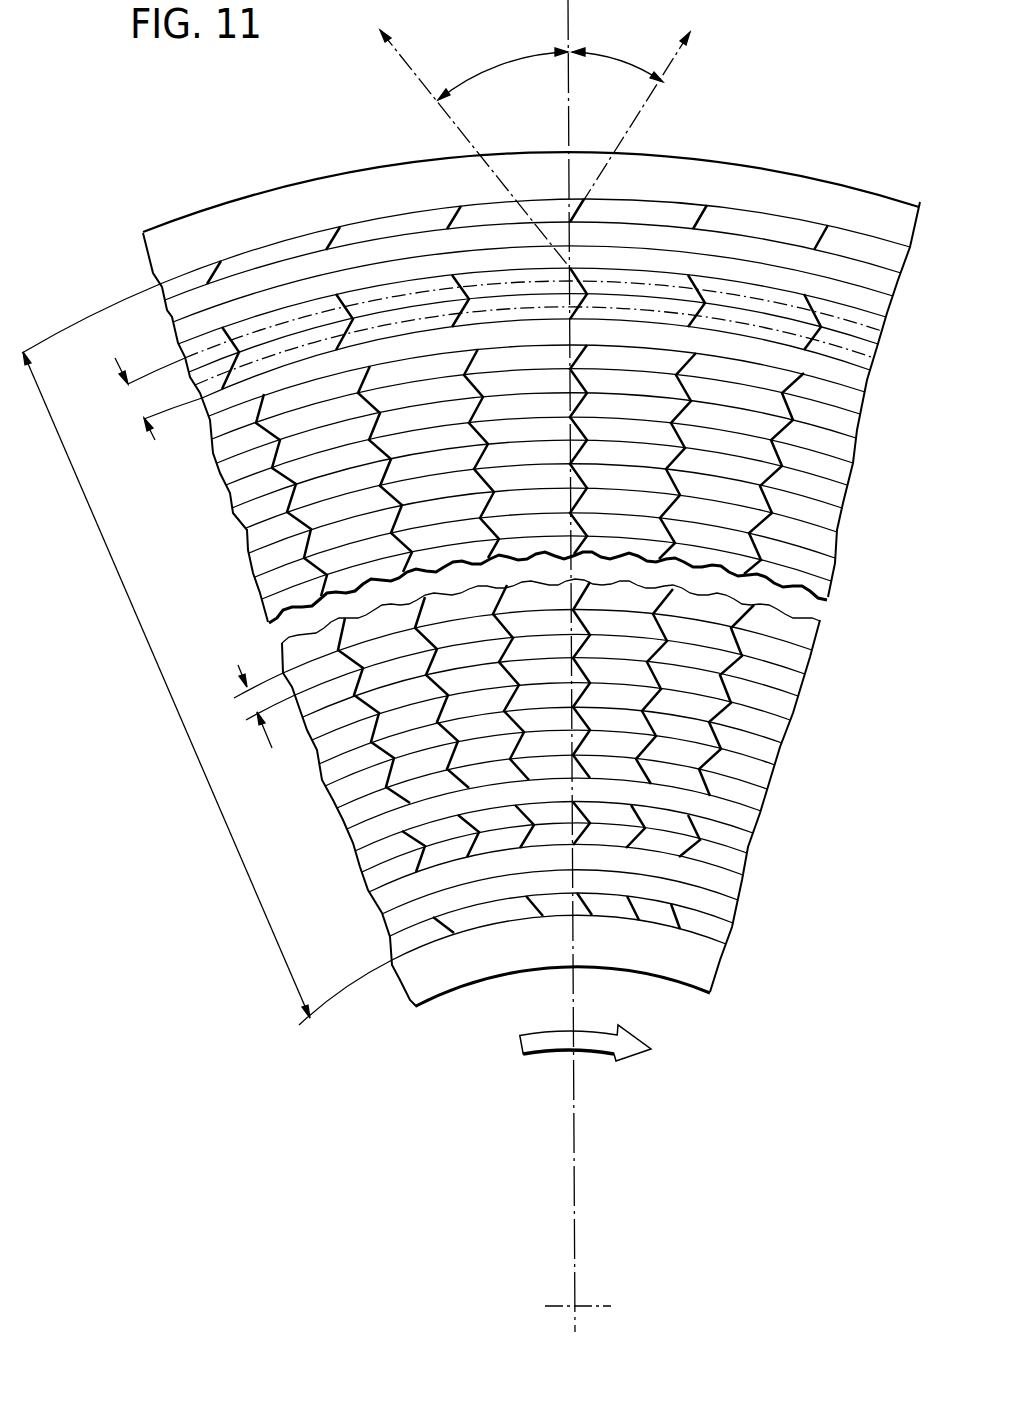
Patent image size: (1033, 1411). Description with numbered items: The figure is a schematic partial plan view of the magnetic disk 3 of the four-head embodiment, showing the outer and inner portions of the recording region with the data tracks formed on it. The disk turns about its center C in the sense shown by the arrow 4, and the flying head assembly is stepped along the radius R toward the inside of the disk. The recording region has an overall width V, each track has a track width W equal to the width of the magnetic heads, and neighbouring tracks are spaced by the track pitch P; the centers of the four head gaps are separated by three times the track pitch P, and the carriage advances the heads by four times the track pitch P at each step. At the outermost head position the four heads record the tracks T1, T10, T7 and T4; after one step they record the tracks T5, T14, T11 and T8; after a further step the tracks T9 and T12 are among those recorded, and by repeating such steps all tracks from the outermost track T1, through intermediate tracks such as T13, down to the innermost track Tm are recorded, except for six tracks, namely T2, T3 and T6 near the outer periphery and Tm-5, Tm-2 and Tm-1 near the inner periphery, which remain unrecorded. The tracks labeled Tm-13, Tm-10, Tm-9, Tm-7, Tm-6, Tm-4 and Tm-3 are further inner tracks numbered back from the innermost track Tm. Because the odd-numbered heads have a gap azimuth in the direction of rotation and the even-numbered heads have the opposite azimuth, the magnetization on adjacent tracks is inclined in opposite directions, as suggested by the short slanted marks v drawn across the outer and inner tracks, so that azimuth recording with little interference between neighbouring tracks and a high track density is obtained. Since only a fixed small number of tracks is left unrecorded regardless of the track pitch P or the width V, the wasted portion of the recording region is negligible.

The magnetic disk 3 is at (818, 183).
The rotation direction arrow 4 is at (598, 1055).
The radius R is at (572, 13).
The center of rotation C is at (576, 1304).
The width of the recording region V is at (207, 654).
The track width W is at (264, 706).
The track pitch P is at (158, 399).
The sipes v is at (287, 255).
The outermost track T1 is at (168, 300).
The unrecorded track T2 is at (171, 323).
The unrecorded track T3 is at (177, 347).
The track T4 is at (885, 325).
The track T5 is at (873, 362).
The unrecorded track T6 is at (866, 384).
The track T7 is at (208, 425).
The track T8 is at (213, 452).
The track T9 is at (848, 446).
The track T10 is at (845, 476).
The track T11 is at (838, 497).
The track T12 is at (248, 552).
The thirteenth circumferential groove T13 is at (250, 580).
The track T14 is at (258, 600).
The innermost track Tm is at (735, 928).
The unrecorded track Tm-1 is at (388, 932).
The unrecorded track Tm-2 is at (380, 910).
The circumferential groove Tm-3 is at (368, 888).
The circumferential groove Tm-4 is at (362, 868).
The unrecorded track Tm-5 is at (355, 848).
The circumferential groove Tm-6 is at (757, 797).
The circumferential groove Tm-7 is at (340, 793).
The circumferential groove Tm-9 is at (772, 728).
The circumferential groove Tm-10 is at (778, 707).
The circumferential groove Tm-13 is at (800, 635).